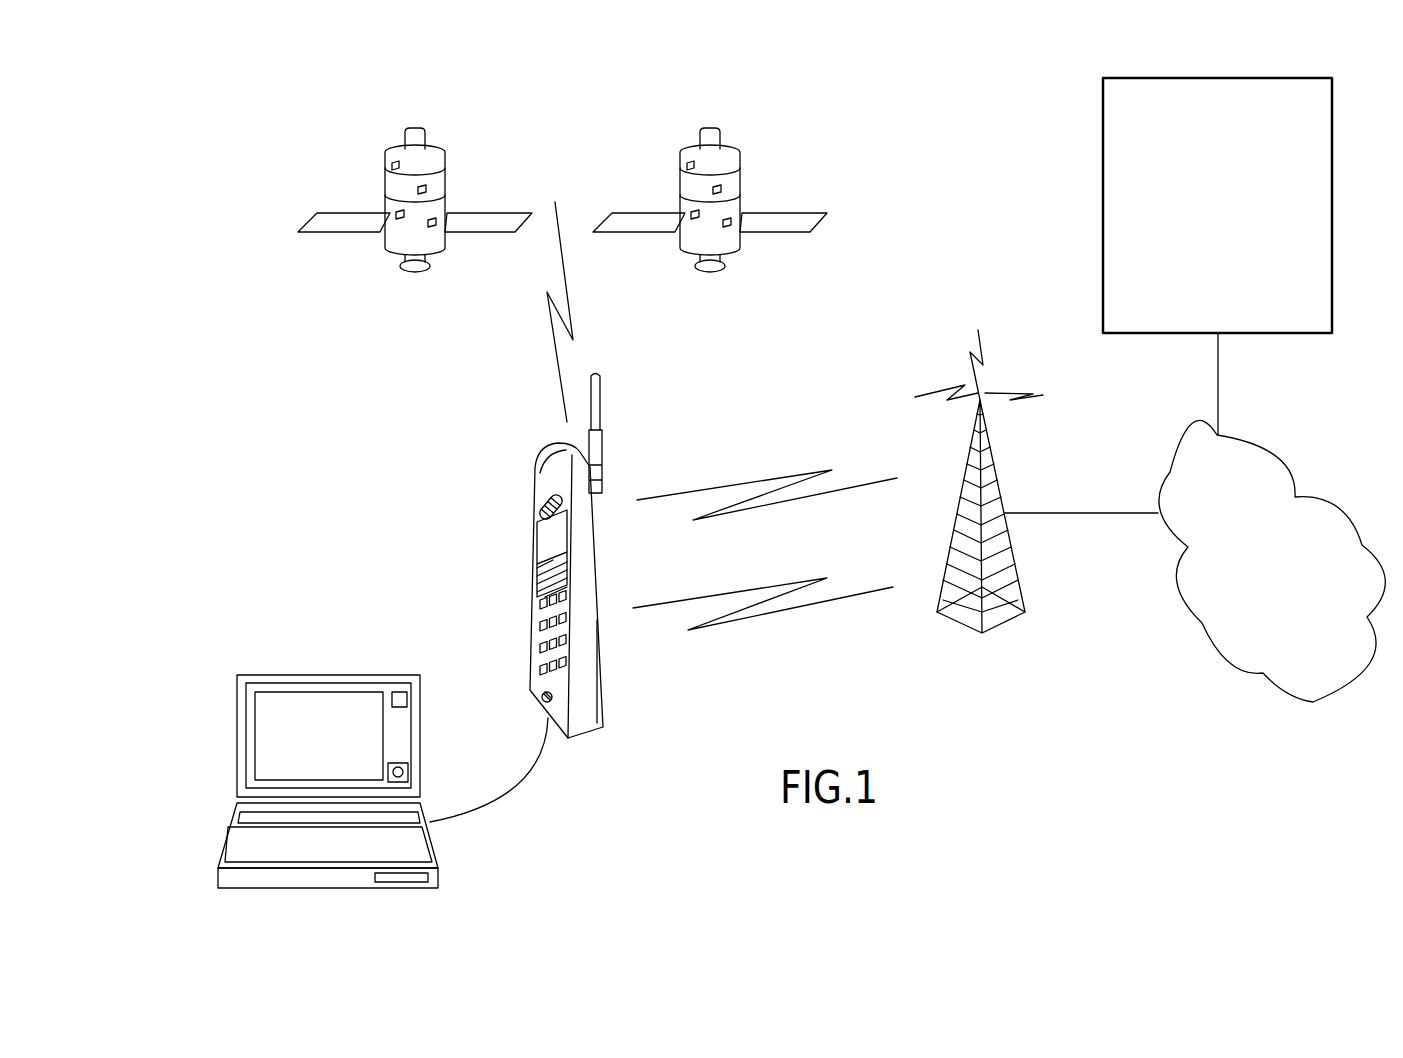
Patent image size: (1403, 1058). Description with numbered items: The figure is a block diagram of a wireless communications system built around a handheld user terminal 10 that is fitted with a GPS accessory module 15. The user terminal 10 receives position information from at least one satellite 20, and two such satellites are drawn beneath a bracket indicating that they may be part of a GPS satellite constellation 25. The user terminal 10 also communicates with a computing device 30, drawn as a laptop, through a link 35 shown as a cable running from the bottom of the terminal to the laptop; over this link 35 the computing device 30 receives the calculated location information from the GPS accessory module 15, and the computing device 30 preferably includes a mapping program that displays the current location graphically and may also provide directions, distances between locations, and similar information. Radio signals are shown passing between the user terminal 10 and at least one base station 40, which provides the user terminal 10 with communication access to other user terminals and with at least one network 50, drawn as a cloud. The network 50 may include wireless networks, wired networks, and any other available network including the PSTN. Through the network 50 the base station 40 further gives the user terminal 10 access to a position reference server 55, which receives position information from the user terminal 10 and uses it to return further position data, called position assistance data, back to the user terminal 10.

The user terminal 10 is at (537, 503).
The GPS accessory module 15 is at (537, 637).
The satellite 20 is at (385, 245).
The GPS satellite constellation 25 is at (783, 113).
The computing device 30 is at (237, 757).
The link 35 is at (513, 778).
The base station 40 is at (1007, 618).
The network 50 is at (1338, 683).
The position reference server 55 is at (1103, 243).